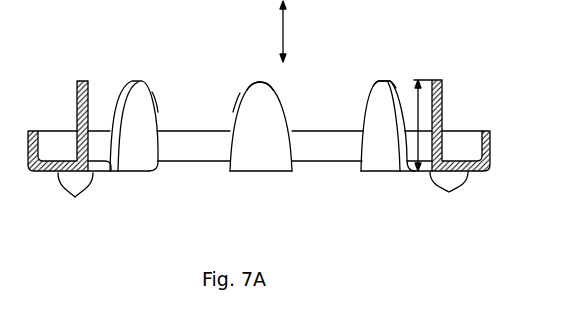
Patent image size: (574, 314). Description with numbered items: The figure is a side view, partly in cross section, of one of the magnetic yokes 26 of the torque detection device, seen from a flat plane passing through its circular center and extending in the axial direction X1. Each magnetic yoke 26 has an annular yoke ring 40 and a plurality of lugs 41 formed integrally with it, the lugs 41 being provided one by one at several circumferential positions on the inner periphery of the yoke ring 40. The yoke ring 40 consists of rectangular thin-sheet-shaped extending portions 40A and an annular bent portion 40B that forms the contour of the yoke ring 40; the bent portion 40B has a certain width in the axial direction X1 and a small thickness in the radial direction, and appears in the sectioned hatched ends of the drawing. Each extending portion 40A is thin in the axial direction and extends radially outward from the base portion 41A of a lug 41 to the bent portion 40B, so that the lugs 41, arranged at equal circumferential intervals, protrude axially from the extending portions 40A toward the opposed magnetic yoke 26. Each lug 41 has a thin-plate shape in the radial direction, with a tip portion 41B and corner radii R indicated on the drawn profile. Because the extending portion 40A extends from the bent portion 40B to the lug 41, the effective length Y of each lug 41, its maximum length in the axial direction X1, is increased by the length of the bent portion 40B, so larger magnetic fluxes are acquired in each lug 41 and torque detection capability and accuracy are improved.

The magnetic yoke 26 is at (195, 174).
The yoke ring 40 is at (331, 128).
The extending portion 40A is at (260, 199).
The bent portion 40B is at (57, 140).
The lug 41 is at (88, 106).
The base portion 41A is at (138, 173).
The tip portion of protrusion 41B is at (260, 80).
The corner radius R is at (158, 112).
The axial direction X1 is at (287, 29).
The effective length Y is at (417, 78).